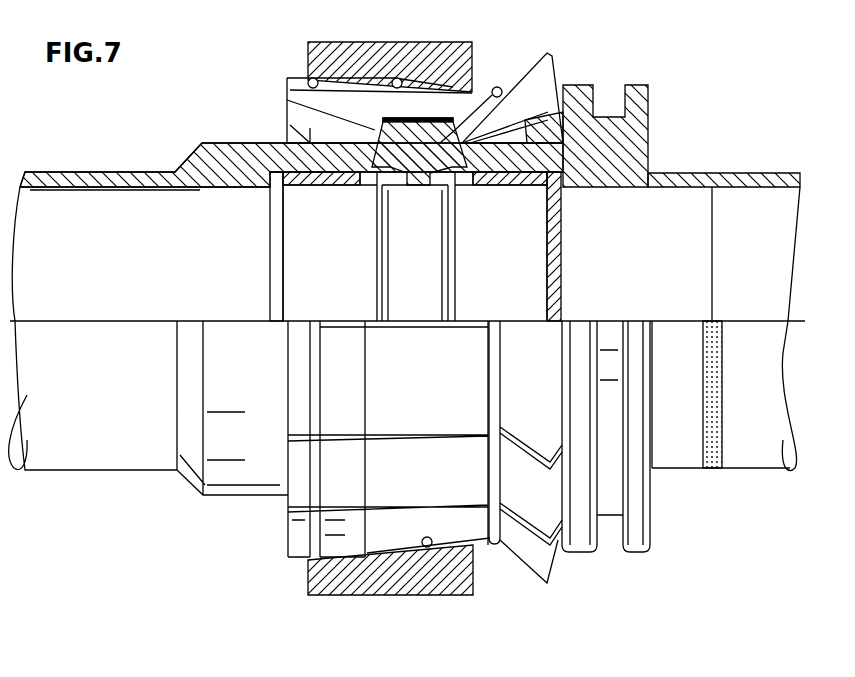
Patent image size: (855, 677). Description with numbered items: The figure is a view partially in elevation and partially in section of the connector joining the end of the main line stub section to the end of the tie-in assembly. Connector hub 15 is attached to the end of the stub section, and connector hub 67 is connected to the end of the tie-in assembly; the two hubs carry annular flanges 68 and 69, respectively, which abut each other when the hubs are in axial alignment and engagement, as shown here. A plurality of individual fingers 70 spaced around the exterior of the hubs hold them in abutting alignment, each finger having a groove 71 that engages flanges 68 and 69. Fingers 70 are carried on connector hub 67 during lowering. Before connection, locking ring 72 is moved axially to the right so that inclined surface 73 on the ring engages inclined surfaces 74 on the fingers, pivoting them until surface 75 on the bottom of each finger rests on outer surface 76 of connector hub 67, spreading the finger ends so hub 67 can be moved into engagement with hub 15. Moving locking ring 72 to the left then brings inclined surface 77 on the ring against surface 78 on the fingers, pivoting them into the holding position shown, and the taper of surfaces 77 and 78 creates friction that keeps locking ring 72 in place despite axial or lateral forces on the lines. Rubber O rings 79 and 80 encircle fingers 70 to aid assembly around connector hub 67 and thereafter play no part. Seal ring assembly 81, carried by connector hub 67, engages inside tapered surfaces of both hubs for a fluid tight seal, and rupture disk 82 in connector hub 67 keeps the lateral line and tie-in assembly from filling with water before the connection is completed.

The connector hub 15 is at (210, 142).
The connector hub 67 is at (676, 175).
The annular flange 68 is at (380, 122).
The annular flange 69 is at (502, 88).
The fingers 70 is at (552, 62).
The groove 71 is at (442, 130).
The locking ring 72 is at (382, 42).
The inclined surface 73 is at (476, 100).
The inclined surfaces 74 is at (549, 56).
The surface 75 is at (505, 133).
The outer surface 76 is at (572, 113).
The inclined surface 77 is at (402, 78).
The surface 78 is at (348, 70).
The rubber O ring 79 is at (495, 546).
The rubber O ring 80 is at (318, 560).
The seal ring assembly 81 is at (429, 190).
The rupture disk 82 is at (563, 268).